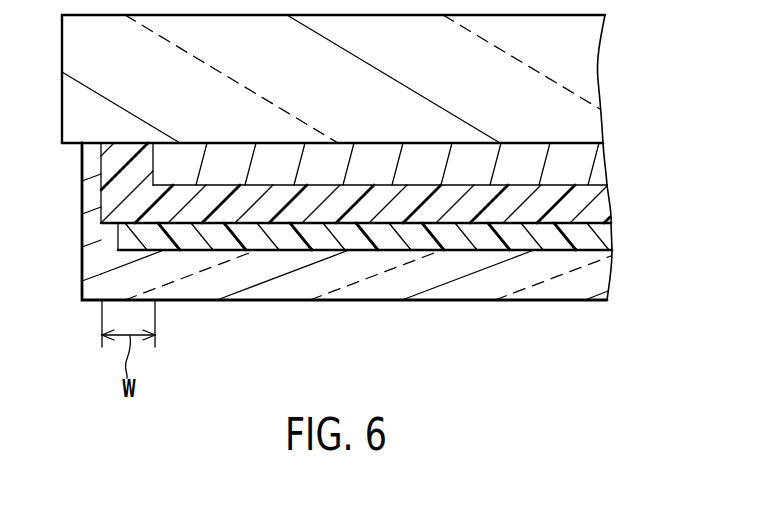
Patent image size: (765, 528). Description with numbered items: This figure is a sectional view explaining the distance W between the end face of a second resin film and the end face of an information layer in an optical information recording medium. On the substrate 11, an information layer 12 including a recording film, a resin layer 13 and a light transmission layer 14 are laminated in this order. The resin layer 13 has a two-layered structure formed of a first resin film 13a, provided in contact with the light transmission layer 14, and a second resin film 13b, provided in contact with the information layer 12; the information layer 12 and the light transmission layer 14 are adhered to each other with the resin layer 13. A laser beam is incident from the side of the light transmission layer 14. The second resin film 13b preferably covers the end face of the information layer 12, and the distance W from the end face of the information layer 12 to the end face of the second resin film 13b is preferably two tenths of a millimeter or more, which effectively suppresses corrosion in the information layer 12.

The substrate 11 is at (577, 72).
The information layer 12 is at (578, 165).
The resin layer 13 is at (413, 200).
The first resin film 13a is at (578, 235).
The second resin film 13b is at (578, 202).
The light transmission layer 14 is at (578, 273).